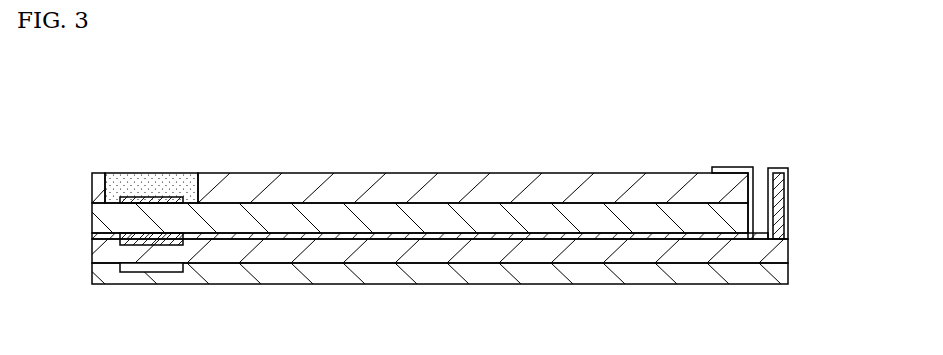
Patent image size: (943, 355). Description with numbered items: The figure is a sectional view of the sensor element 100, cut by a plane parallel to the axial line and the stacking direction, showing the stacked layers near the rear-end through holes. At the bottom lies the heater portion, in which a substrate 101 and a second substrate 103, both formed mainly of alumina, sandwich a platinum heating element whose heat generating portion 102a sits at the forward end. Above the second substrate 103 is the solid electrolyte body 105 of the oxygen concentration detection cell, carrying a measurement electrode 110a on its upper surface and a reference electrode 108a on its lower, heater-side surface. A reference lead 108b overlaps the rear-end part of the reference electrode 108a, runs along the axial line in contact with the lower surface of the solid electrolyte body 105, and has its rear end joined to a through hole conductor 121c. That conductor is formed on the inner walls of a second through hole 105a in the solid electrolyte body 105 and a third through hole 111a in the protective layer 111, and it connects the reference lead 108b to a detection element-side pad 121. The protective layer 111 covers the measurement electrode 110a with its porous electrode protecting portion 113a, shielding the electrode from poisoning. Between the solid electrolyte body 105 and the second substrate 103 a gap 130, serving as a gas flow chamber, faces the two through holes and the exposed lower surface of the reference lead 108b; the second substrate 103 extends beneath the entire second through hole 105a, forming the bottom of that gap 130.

The sensor element 100 is at (576, 110).
The substrate 101 is at (783, 277).
The heat generating portion 102a is at (137, 273).
The second substrate 103 is at (784, 250).
The solid electrolyte body 105 is at (92, 218).
The second through hole 105a is at (778, 206).
The reference electrode 108a is at (119, 238).
The reference lead 108b is at (270, 233).
The measurement electrode 110a is at (166, 197).
The protective layer 111 is at (92, 193).
The third through hole 111a is at (763, 166).
The electrode protecting portion 113a is at (138, 172).
The detection element-side pad 121 is at (733, 167).
The through hole conductor 121c is at (771, 211).
The gap 130 is at (770, 236).